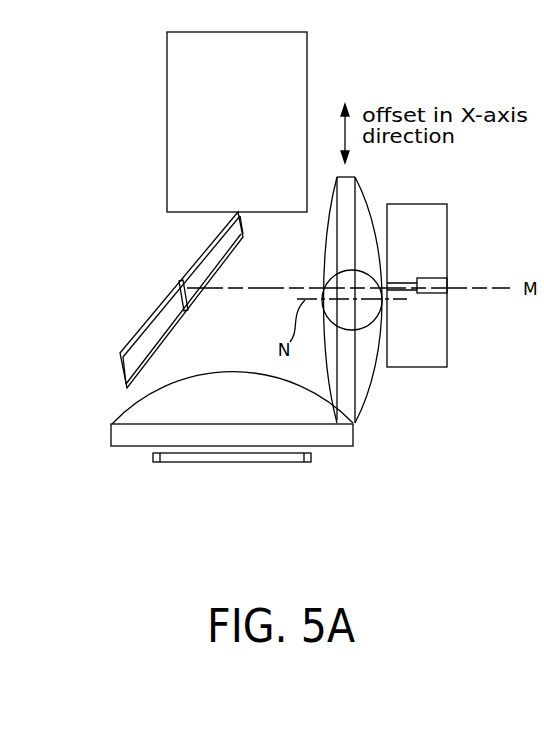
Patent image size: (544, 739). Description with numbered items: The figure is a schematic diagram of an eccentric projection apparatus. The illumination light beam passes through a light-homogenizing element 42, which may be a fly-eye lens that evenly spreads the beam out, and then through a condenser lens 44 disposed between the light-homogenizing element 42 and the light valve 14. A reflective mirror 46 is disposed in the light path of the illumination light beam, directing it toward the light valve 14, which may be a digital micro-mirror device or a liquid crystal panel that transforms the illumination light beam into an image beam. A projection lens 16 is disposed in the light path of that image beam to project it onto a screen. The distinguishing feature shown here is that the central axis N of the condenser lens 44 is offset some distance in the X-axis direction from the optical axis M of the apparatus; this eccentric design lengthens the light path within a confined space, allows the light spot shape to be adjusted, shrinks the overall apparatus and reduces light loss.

The light valve 14 is at (222, 462).
The projection lens 16 is at (167, 128).
The light-homogenizing element 42 is at (417, 367).
The condenser lens 44 is at (365, 200).
The reflective mirror 46 is at (165, 298).